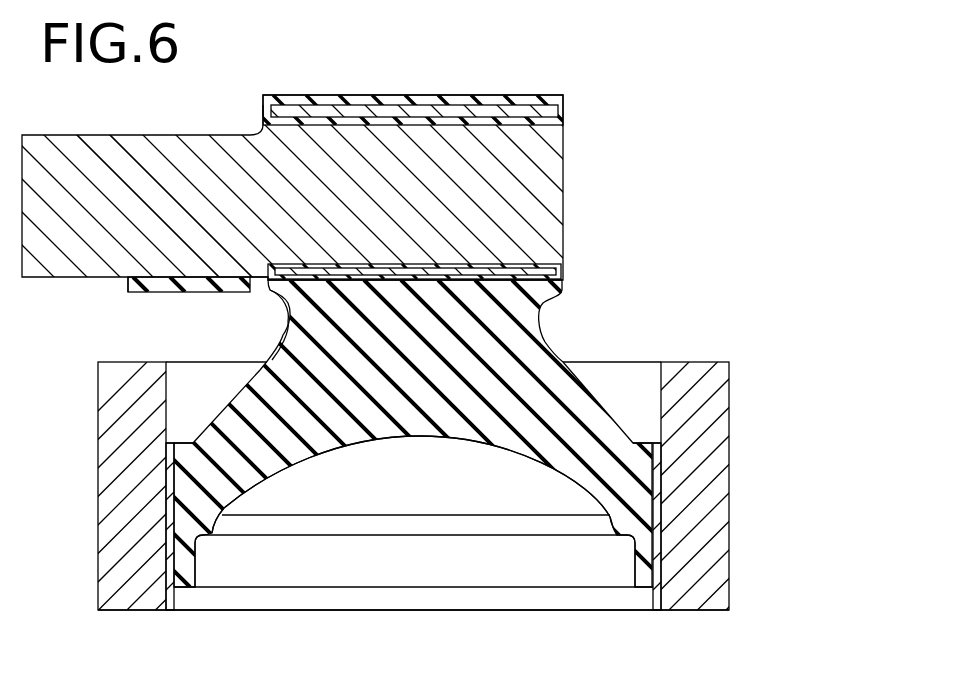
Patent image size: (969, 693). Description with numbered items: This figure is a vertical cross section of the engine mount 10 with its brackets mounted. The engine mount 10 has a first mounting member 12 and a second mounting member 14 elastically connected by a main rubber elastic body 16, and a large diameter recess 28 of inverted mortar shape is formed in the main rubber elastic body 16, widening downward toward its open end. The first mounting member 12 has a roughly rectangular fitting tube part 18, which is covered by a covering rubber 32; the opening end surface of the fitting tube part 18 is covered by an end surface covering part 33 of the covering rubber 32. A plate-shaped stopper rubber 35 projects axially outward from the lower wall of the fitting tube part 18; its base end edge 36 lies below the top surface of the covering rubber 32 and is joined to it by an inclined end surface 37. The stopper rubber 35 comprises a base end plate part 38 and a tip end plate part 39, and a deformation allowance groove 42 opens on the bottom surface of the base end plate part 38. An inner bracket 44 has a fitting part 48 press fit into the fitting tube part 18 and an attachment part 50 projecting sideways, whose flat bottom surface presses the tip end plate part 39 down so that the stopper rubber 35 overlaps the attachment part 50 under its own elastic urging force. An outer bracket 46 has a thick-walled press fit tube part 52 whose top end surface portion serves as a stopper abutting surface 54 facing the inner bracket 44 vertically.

The engine mount 10 is at (624, 274).
The first mounting member 12 is at (519, 98).
The second mounting member 14 is at (669, 599).
The main rubber elastic body 16 is at (589, 385).
The fitting tube part 18 is at (331, 108).
The large diameter recess 28 is at (345, 458).
The covering rubber 32 is at (418, 98).
The end surface covering part 33 is at (266, 111).
The stopper rubber 35 is at (121, 290).
The base end edge 36 is at (250, 277).
The inclined end surface 37 is at (266, 264).
The base end plate part 38 is at (256, 291).
The tip end plate part 39 is at (190, 293).
The deformation allowance groove 42 is at (270, 293).
The inner bracket 44 is at (77, 132).
The outer bracket 46 is at (738, 552).
The fitting part 48 is at (563, 186).
The attachment part 50 is at (152, 165).
The press fit tube part 52 is at (694, 498).
The stopper abutting surface 54 is at (158, 364).